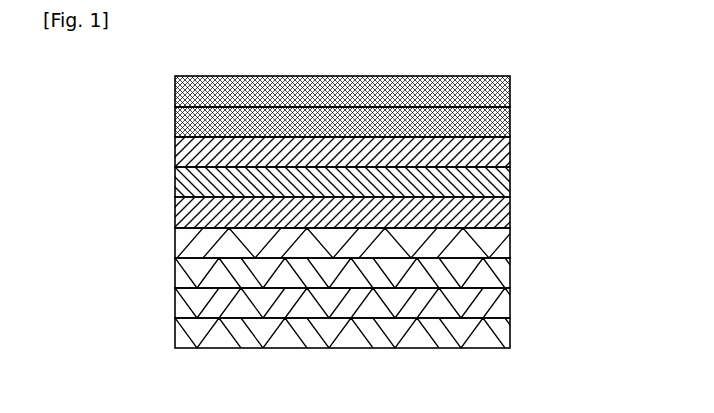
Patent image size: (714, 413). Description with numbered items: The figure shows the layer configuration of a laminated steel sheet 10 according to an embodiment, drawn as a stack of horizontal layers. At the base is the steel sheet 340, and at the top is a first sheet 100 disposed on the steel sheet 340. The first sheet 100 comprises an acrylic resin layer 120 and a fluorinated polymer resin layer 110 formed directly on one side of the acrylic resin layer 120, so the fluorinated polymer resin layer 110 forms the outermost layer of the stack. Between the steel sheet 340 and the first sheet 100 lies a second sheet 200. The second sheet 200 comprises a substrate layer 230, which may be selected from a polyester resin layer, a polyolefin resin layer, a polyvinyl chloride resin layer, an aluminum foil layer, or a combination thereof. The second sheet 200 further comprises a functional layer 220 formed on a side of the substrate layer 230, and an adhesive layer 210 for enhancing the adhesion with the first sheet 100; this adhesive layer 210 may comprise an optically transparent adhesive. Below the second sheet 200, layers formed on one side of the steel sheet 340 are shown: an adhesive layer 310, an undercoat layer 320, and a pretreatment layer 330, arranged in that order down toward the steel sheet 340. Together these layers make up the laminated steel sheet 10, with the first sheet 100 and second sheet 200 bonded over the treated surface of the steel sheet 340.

The laminated steel sheet 10 is at (353, 61).
The first sheet 100 is at (523, 87).
The fluorinated polymer resin layer 110 is at (175, 93).
The acrylic resin layer 120 is at (175, 122).
The second sheet 200 is at (523, 150).
The adhesive layer 210 is at (175, 155).
The functional layer 220 is at (175, 187).
The substrate layer 230 is at (175, 218).
The adhesive layer 310 is at (175, 248).
The undercoat layer 320 is at (175, 278).
The pretreatment layer 330 is at (175, 307).
The steel sheet 340 is at (175, 337).